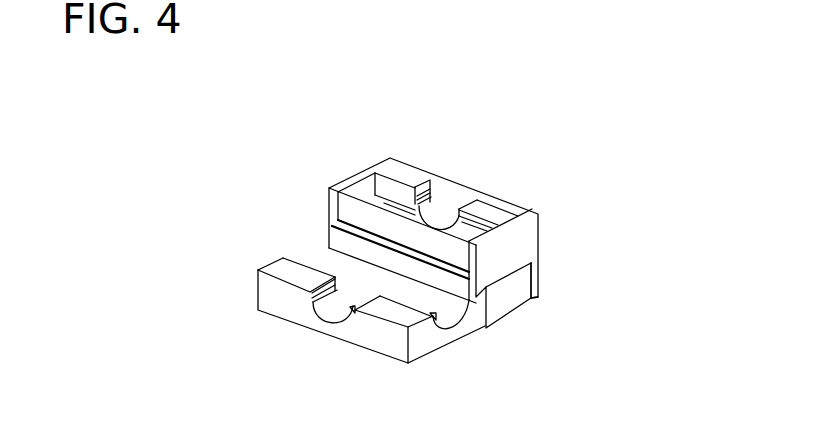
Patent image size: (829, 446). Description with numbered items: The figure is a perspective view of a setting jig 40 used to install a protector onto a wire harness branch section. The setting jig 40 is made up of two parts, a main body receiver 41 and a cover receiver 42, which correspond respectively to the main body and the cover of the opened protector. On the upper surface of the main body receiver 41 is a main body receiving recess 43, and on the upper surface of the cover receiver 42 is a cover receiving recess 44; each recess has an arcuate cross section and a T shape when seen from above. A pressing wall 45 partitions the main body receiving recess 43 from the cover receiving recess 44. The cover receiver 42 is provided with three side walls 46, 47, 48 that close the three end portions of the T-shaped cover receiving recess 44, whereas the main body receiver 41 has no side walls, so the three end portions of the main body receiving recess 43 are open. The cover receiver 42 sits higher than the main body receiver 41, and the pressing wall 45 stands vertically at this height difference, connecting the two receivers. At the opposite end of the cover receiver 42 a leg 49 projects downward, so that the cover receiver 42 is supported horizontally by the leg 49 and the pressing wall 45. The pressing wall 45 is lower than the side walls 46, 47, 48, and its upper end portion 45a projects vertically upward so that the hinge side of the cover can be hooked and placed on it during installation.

The setting jig 40 is at (236, 189).
The main body receiver 41 is at (465, 337).
The cover receiver 42 is at (511, 284).
The main body receiving recess 43 is at (324, 266).
The cover receiving recess 44 is at (370, 210).
The pressing wall 45 is at (342, 233).
The upper end portion 45a is at (385, 238).
The side wall 46 is at (509, 248).
The side wall 47 is at (353, 200).
The side wall 48 is at (453, 201).
The leg 49 is at (535, 282).